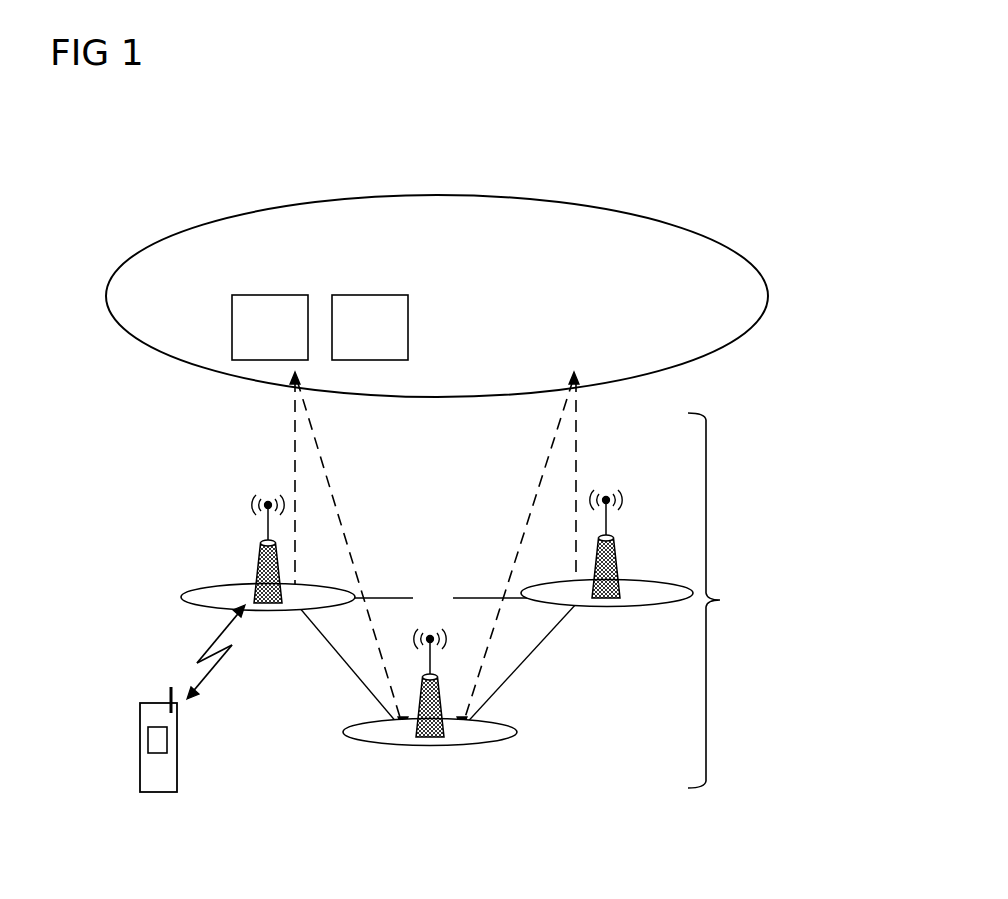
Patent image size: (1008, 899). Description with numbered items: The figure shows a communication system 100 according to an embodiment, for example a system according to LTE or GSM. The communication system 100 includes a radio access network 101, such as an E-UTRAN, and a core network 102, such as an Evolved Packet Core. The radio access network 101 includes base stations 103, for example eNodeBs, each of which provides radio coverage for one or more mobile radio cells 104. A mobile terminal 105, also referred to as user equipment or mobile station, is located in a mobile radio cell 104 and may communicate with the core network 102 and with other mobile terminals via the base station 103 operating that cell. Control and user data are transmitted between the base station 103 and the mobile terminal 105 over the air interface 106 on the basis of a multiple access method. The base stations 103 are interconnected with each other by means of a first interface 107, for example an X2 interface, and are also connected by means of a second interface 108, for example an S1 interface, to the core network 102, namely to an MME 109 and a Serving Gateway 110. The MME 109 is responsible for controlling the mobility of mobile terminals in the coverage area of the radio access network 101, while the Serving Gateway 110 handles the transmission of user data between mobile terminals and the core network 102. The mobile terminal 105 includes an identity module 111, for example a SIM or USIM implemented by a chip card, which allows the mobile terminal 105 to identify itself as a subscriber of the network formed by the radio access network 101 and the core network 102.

The communication system 100 is at (742, 128).
The radio access network 101 is at (805, 577).
The core network 102 is at (755, 272).
The base station 103 is at (255, 553).
The mobile radio cell 104 is at (200, 603).
The mobile terminal 105 is at (123, 779).
The air interface 106 is at (237, 667).
The first interface 107 is at (430, 573).
The second interface 108 is at (293, 432).
The MME 109 is at (270, 295).
The Serving Gateway 110 is at (370, 295).
The identity module 111 is at (157, 748).